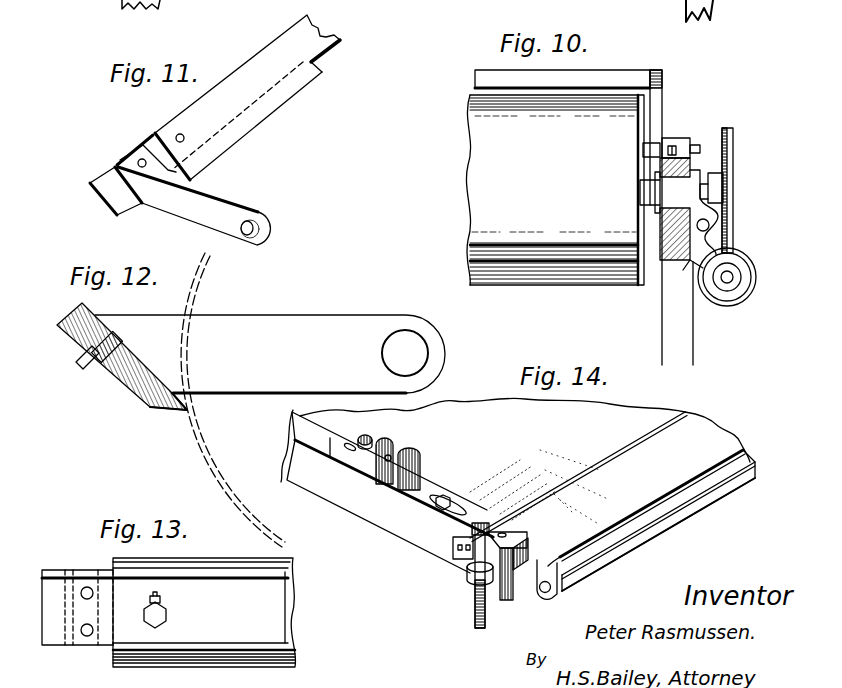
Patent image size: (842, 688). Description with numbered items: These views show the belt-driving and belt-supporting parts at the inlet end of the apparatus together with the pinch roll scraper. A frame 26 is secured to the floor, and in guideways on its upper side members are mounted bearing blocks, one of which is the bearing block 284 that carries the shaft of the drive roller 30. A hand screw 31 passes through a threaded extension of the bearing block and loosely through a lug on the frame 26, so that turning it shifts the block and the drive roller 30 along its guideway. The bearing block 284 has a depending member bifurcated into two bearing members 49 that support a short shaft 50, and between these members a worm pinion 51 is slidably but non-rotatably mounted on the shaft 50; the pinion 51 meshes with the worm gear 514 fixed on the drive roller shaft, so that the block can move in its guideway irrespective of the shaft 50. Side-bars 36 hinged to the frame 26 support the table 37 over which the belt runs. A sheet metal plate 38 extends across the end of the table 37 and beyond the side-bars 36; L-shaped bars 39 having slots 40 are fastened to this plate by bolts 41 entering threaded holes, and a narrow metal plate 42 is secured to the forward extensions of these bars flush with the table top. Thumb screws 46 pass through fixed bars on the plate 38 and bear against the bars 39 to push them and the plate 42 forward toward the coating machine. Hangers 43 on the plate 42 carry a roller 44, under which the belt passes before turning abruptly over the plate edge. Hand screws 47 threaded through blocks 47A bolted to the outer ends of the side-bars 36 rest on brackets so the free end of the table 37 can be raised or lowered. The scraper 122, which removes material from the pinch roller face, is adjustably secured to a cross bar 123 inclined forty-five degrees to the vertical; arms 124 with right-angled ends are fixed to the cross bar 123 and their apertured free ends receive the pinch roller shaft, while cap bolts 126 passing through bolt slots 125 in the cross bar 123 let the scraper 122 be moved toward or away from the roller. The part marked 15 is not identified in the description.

In FIG. 10, the table 37 is at (484, 78).
In FIG. 10, the side-bars 36 is at (665, 92).
In FIG. 14, the side-bars 36 is at (417, 548).
In FIG. 10, the drive roller 30 is at (555, 190).
In FIG. 10, the bearing block 284 is at (674, 183).
In FIG. 10, the worm gear 514 is at (735, 147).
In FIG. 10, the hand screw 31 is at (710, 222).
In FIG. 10, the short shaft 50 is at (735, 267).
In FIG. 10, the worm pinion 51 is at (757, 273).
In FIG. 10, the bearing members 49 is at (733, 291).
In FIG. 10, the frame 26 is at (668, 264).
In FIG. 11, the scraper 122 is at (228, 138).
In FIG. 12, the scraper 122 is at (125, 360).
In FIG. 13, the scraper 122 is at (297, 637).
In FIG. 11, the cross bar 123 is at (313, 47).
In FIG. 12, the cross bar 123 is at (118, 390).
In FIG. 13, the cross bar 123 is at (200, 623).
In FIG. 11, the arms 124 is at (213, 213).
In FIG. 12, the arms 124 is at (270, 354).
In FIG. 12, the bolt slots 125 is at (108, 367).
In FIG. 13, the bolt slots 125 is at (152, 601).
In FIG. 12, the cap bolts 126 is at (88, 362).
In FIG. 13, the cap bolts 126 is at (165, 611).
In FIG. 14, the thumb screws 46 is at (370, 437).
In FIG. 14, the sheet metal plate 38 is at (515, 482).
In FIG. 14, the slots 40 is at (431, 495).
In FIG. 14, the bolts 41 is at (450, 498).
In FIG. 14, the narrow metal plate 42 is at (578, 477).
In FIG. 14, the plate 15 is at (353, 467).
In FIG. 14, the L-shaped bars 39 is at (407, 492).
In FIG. 14, the roller 44 is at (652, 528).
In FIG. 14, the blocks 47A is at (470, 576).
In FIG. 14, the hand screws 47 is at (475, 604).
In FIG. 14, the hangers 43 is at (540, 573).